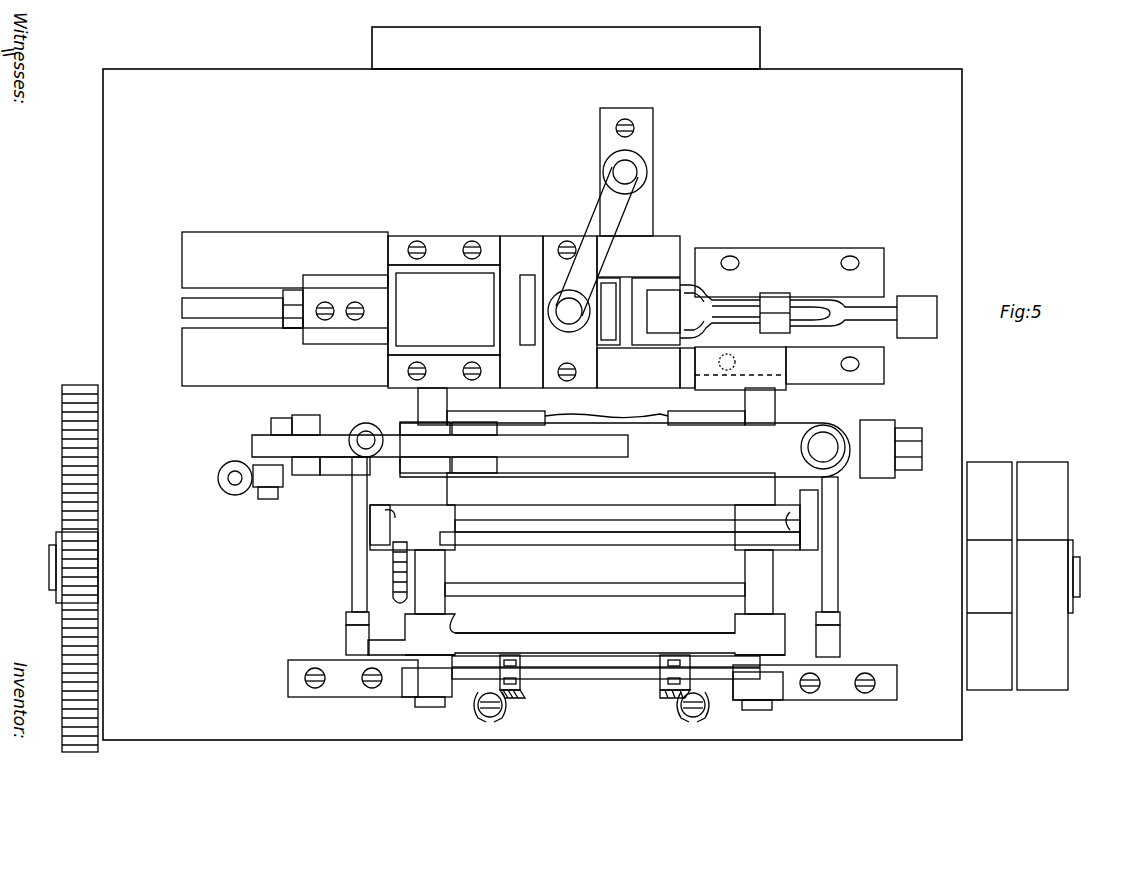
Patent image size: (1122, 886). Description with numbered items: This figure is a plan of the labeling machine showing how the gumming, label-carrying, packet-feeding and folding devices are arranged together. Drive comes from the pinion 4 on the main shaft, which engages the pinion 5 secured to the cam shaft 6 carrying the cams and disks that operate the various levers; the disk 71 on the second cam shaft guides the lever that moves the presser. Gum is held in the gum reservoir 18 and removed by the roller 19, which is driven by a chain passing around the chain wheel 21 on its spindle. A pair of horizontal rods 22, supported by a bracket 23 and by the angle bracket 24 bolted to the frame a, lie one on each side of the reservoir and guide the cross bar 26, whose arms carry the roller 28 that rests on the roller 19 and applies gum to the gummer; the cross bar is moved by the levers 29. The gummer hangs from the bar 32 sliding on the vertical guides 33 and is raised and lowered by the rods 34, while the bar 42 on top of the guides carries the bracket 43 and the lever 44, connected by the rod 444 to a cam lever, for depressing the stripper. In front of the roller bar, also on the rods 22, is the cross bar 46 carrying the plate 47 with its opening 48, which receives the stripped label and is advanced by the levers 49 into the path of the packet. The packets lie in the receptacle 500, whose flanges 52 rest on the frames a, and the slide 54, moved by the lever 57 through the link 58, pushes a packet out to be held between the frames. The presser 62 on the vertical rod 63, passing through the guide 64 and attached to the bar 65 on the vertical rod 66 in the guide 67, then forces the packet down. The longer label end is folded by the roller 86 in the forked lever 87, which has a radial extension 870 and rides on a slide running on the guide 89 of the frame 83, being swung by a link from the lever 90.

The disk 71 is at (566, 48).
The guide 67 is at (642, 172).
The vertical rod 66 is at (630, 172).
The bar 65 is at (597, 241).
The frames a is at (438, 310).
The slide 54 is at (345, 309).
The link 58 is at (290, 308).
The lever 57 is at (293, 328).
The flanges of the receptacle 52 is at (444, 312).
The receptacle 500 is at (444, 310).
The guide 64 is at (570, 312).
The vertical rod 63 is at (569, 311).
The presser 62 is at (609, 311).
The roller 86 is at (696, 311).
The lever 87 is at (744, 312).
The radial extension 870 is at (804, 318).
The guide 89 is at (843, 313).
The lever 90 is at (915, 300).
The frame 83 is at (789, 316).
The angle bracket 24 is at (740, 368).
The horizontal rods 22 is at (595, 501).
The plate 47 is at (528, 410).
The opening 48 is at (606, 407).
The bar 42 is at (500, 475).
The lever 44 is at (514, 446).
The bracket 43 is at (445, 465).
The vertical guides 33 is at (368, 430).
The bar 32 is at (322, 462).
The rods 34 is at (302, 470).
The rod 444 is at (230, 487).
The levers 29 is at (355, 588).
The cross bar 46 is at (585, 527).
The levers 49 is at (815, 495).
The chain wheel 21 is at (393, 565).
The roller 28 is at (330, 545).
The roller 19 is at (526, 596).
The cross bar 26 is at (462, 635).
The bracket 23 is at (592, 685).
The gum reservoir 18 is at (605, 668).
The pinion 5 is at (82, 492).
The pinion 4 is at (82, 563).
The cam shaft 6 is at (49, 566).